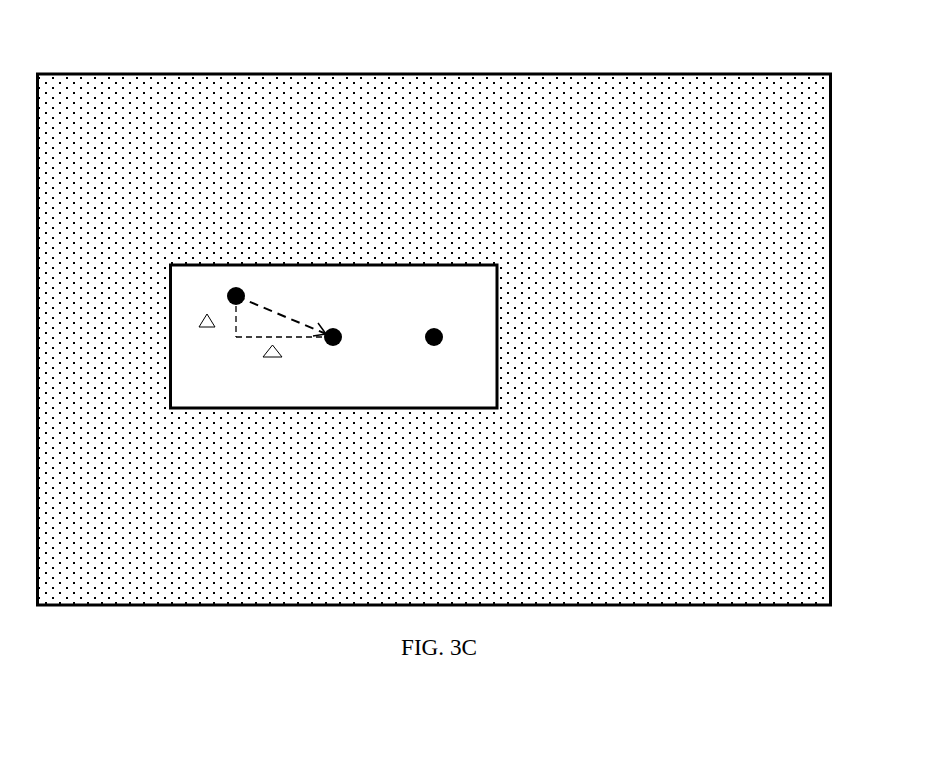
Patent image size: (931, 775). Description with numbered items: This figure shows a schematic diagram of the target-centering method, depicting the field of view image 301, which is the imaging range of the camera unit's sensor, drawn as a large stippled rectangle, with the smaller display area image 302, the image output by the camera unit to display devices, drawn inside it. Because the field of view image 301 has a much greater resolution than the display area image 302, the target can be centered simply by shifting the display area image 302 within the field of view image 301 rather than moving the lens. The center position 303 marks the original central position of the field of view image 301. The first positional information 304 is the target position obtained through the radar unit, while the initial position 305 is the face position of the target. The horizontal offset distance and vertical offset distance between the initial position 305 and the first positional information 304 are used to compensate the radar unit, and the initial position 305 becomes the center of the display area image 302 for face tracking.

The field of view image 301 is at (613, 74).
The display area image 302 is at (382, 265).
The center position 303 is at (442, 334).
The first positional information 304 is at (232, 288).
The initial position 305 is at (338, 344).